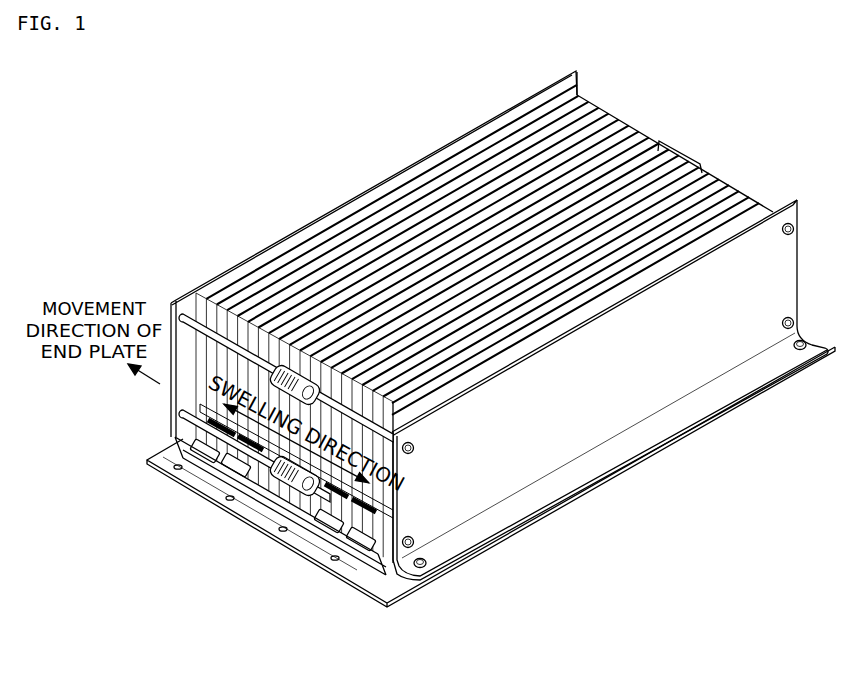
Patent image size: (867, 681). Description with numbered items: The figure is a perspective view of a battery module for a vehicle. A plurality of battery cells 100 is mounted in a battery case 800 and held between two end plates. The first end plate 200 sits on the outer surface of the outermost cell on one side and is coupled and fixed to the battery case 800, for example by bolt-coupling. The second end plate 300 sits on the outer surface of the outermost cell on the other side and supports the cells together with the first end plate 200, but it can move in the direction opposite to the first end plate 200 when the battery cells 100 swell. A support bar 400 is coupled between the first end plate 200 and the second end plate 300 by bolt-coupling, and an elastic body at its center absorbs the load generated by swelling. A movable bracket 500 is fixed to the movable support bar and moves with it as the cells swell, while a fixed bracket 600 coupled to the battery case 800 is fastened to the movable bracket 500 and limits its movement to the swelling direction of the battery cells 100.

The battery cells 100 is at (388, 204).
The first end plate 200 is at (536, 456).
The second end plate 300 is at (180, 303).
The support bar 400 is at (248, 450).
The movable bracket 500 is at (183, 419).
The fixed bracket 600 is at (264, 518).
The battery case 800 is at (380, 584).